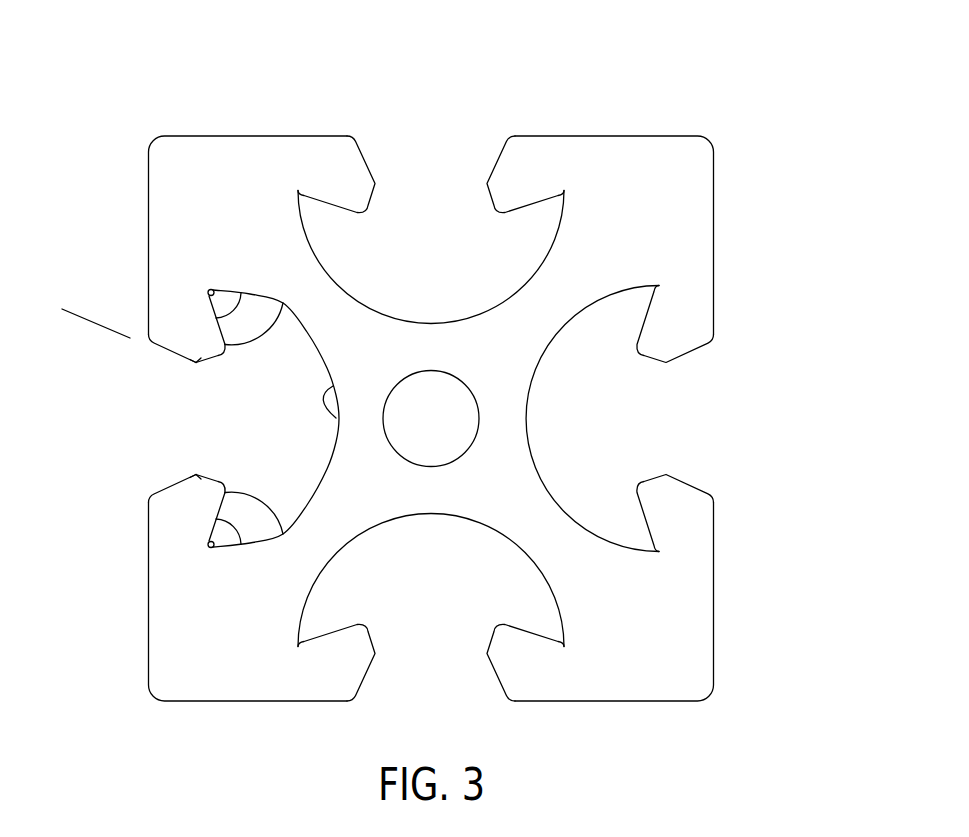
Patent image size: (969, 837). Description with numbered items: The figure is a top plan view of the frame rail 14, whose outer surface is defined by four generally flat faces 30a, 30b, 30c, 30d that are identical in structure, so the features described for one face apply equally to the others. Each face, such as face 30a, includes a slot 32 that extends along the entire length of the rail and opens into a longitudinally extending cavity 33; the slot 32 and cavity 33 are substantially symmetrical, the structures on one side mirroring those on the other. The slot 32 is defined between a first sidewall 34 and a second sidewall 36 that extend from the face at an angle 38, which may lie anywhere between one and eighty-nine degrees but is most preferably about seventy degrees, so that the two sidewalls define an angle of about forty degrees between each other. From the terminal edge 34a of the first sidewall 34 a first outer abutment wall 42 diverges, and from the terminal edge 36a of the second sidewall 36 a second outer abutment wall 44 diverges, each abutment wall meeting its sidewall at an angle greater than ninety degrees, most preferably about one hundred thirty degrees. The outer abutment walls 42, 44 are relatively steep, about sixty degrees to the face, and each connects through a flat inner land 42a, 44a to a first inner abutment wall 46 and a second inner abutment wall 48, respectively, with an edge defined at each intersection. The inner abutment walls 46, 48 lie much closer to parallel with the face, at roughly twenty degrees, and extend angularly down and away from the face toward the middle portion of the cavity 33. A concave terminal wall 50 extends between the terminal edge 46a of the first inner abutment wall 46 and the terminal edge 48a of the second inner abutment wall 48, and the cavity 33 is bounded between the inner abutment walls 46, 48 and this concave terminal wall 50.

The frame rail 14 is at (634, 77).
The face 30a is at (145, 580).
The face 30b is at (291, 133).
The face 30c is at (717, 282).
The face 30d is at (292, 708).
The slot 32 is at (430, 165).
The cavity 33 is at (442, 298).
The first sidewall 34 is at (178, 355).
The terminal edge 34a is at (199, 365).
The second sidewall 36 is at (177, 483).
The terminal edge 36a is at (199, 472).
The angle 38 is at (143, 280).
The first outer abutment wall 42 is at (210, 356).
The inner land 42a is at (284, 305).
The second outer abutment wall 44 is at (208, 483).
The inner land 44a is at (284, 535).
The first inner abutment wall 46 is at (241, 293).
The terminal edge 46a is at (214, 290).
The second inner abutment wall 48 is at (241, 544).
The terminal edge 48a is at (214, 548).
The concave terminal wall 50 is at (333, 386).